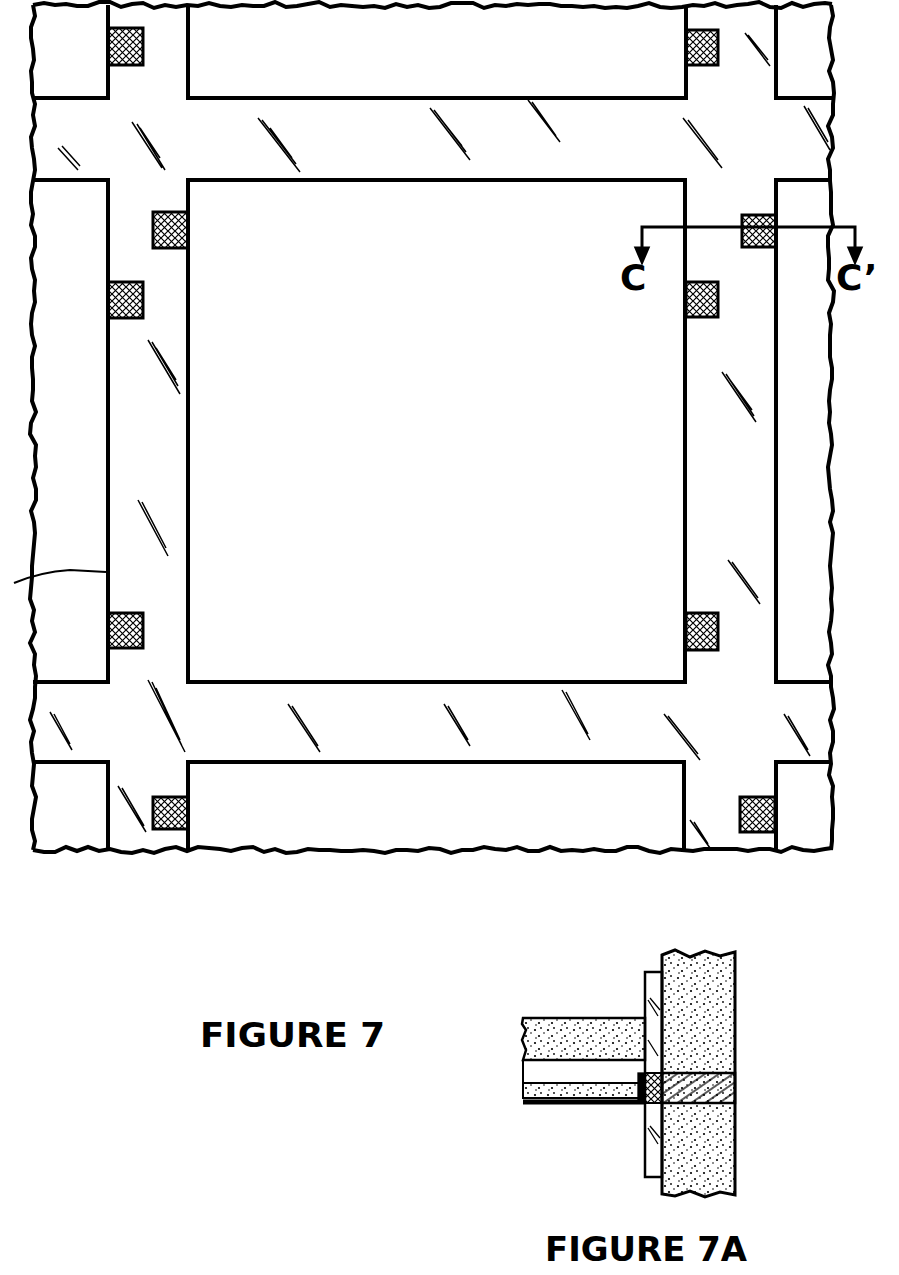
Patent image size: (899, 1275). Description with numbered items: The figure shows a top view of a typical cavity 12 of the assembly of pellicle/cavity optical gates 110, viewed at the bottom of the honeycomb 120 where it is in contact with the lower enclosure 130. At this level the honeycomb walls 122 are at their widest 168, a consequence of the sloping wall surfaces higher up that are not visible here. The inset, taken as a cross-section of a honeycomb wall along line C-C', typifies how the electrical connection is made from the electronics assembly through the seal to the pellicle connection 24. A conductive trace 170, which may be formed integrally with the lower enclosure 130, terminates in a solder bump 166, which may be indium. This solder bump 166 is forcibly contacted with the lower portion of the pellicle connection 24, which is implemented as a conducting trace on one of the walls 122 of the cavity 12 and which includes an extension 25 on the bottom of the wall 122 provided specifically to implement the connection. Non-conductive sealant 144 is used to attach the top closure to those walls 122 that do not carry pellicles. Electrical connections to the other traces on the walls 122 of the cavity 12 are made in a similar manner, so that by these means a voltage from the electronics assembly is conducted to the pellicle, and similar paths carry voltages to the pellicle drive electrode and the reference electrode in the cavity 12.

In FIG. 7, the assembly of pellicle/cavity optical gates 110 is at (156, 872).
In FIG. 7, the honeycomb 120 is at (355, 98).
In FIG. 7, the cavity 12 is at (368, 320).
In FIG. 7, the lower enclosure 130 is at (322, 560).
In FIG. 7A, the lower enclosure 130 is at (715, 1020).
In FIG. 7, the honeycomb wall 122 is at (683, 381).
In FIG. 7A, the honeycomb wall 122 is at (555, 1015).
In FIG. 7, the widest portion of the honeycomb walls 168 is at (706, 478).
In FIG. 7A, the widest portion of the honeycomb walls 168 is at (525, 1063).
In FIG. 7, the solder bump 166 is at (742, 222).
In FIG. 7A, the solder bump 166 is at (645, 1105).
In FIG. 7A, the non-conductive sealant 144 is at (646, 1000).
In FIG. 7A, the conductive trace 170 is at (735, 1088).
In FIG. 7A, the extension 25 is at (525, 1083).
In FIG. 7A, the pellicle connection 24 is at (525, 1100).